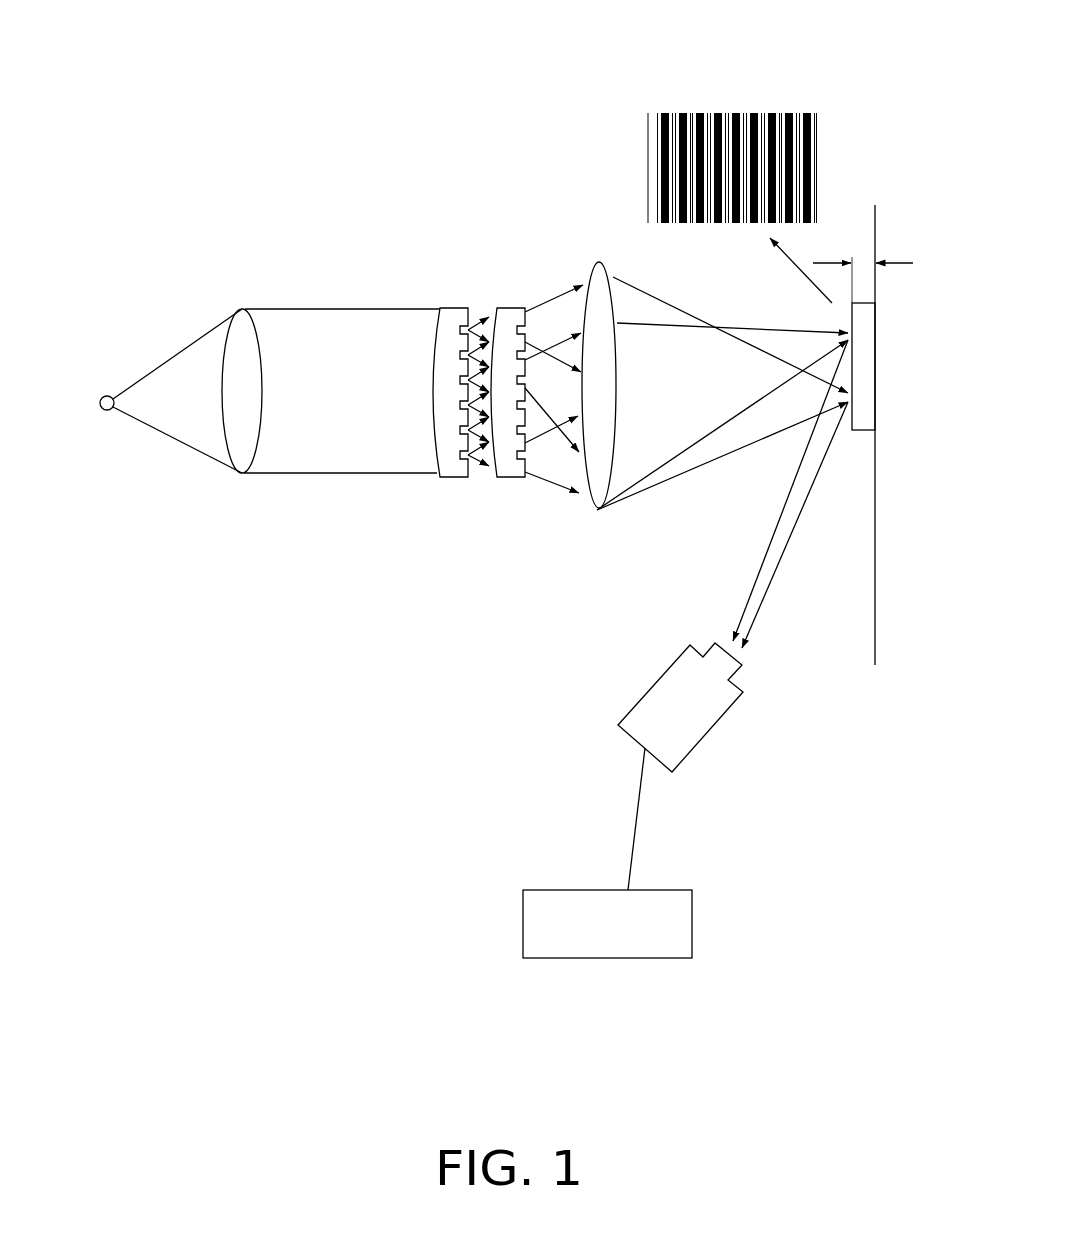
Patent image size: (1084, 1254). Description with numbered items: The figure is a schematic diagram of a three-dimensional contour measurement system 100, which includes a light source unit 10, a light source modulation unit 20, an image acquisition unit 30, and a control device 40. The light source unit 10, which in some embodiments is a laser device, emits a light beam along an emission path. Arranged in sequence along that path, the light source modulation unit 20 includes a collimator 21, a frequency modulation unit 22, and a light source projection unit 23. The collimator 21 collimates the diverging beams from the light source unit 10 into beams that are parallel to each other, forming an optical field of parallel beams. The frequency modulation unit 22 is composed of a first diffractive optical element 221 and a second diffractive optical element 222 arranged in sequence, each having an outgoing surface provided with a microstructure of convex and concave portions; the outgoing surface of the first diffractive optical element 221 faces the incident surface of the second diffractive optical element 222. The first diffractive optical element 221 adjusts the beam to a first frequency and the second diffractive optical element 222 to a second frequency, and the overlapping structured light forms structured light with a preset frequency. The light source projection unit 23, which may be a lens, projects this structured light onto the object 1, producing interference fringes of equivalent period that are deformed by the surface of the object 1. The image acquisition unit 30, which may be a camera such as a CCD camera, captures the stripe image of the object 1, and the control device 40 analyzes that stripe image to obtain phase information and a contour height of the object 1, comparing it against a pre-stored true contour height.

The three-dimensional contour measurement system 100 is at (545, 44).
The light source unit 10 is at (103, 397).
The light source modulation unit 20 is at (603, 557).
The collimator 21 is at (241, 465).
The frequency modulation unit 22 is at (543, 528).
The first diffractive optical element 221 is at (454, 468).
The second diffractive optical element 222 is at (510, 468).
The light source projection unit 23 is at (598, 510).
The object 1 is at (862, 362).
The image acquisition unit 30 is at (715, 727).
The control device 40 is at (692, 923).